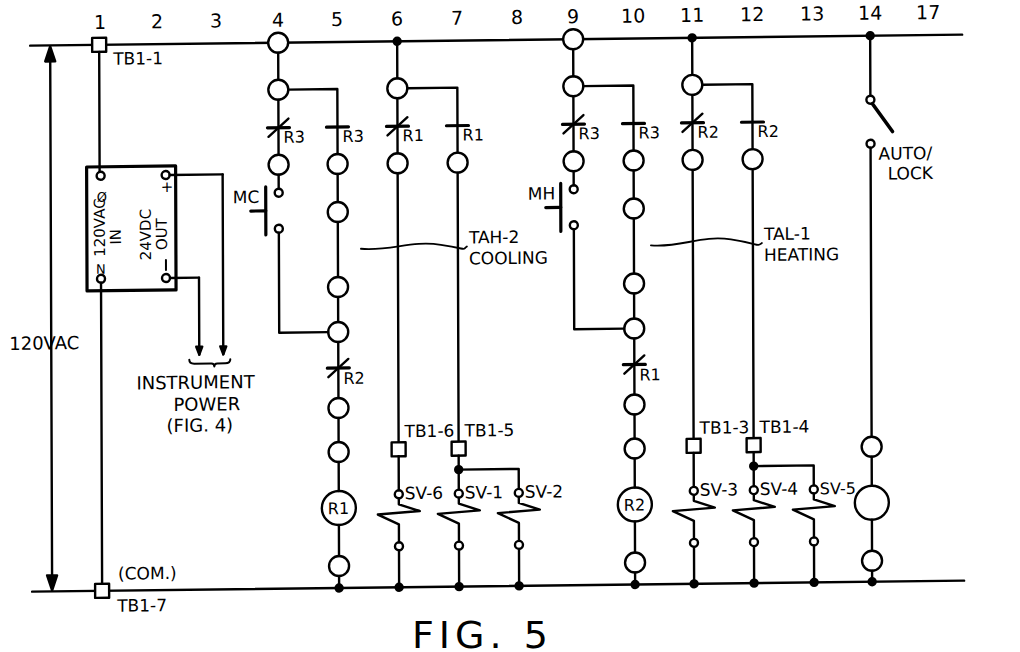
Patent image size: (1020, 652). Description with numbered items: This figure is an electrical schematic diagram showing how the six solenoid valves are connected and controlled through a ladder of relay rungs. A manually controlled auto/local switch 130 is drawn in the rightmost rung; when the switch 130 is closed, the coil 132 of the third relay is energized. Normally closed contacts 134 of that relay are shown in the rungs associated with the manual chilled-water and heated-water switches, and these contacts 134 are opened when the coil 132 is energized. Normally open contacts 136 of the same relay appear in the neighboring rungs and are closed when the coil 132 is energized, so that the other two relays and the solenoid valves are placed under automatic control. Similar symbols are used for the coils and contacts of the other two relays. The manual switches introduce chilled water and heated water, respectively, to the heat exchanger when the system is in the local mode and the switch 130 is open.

The auto/local switch 130 is at (868, 125).
The coil of relay R3 132 is at (887, 516).
The normally closed contacts of relay R3 134 is at (271, 130).
The normally open contacts of relay R3 136 is at (334, 131).